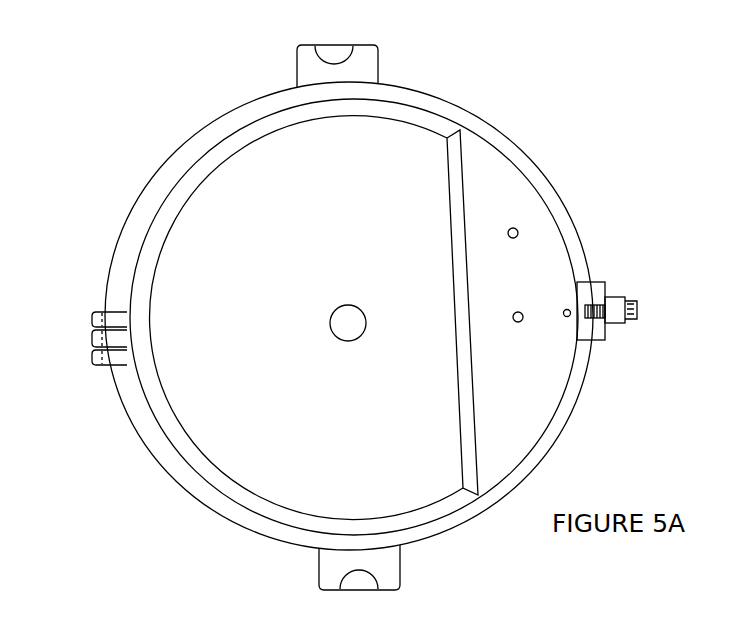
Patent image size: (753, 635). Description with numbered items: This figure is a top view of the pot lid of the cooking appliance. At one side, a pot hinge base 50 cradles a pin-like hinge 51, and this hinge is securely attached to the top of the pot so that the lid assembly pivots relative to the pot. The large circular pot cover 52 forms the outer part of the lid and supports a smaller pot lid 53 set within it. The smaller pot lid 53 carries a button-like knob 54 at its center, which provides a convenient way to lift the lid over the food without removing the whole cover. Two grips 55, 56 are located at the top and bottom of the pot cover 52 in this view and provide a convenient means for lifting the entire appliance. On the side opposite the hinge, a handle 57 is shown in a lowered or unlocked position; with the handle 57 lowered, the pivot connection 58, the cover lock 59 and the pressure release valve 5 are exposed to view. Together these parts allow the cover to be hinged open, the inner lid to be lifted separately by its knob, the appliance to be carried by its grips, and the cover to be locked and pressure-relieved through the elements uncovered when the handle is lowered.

The pressure release valve 5 is at (521, 323).
The pot hinge base 50 is at (90, 364).
The pin-like hinge 51 is at (90, 338).
The pot cover 52 is at (190, 144).
The pot lid 53 is at (232, 496).
The knob 54 is at (336, 341).
The grip 55 is at (338, 45).
The grip 56 is at (364, 590).
The handle 57 is at (607, 332).
The pivot connection 58 is at (598, 282).
The cover lock 59 is at (566, 311).